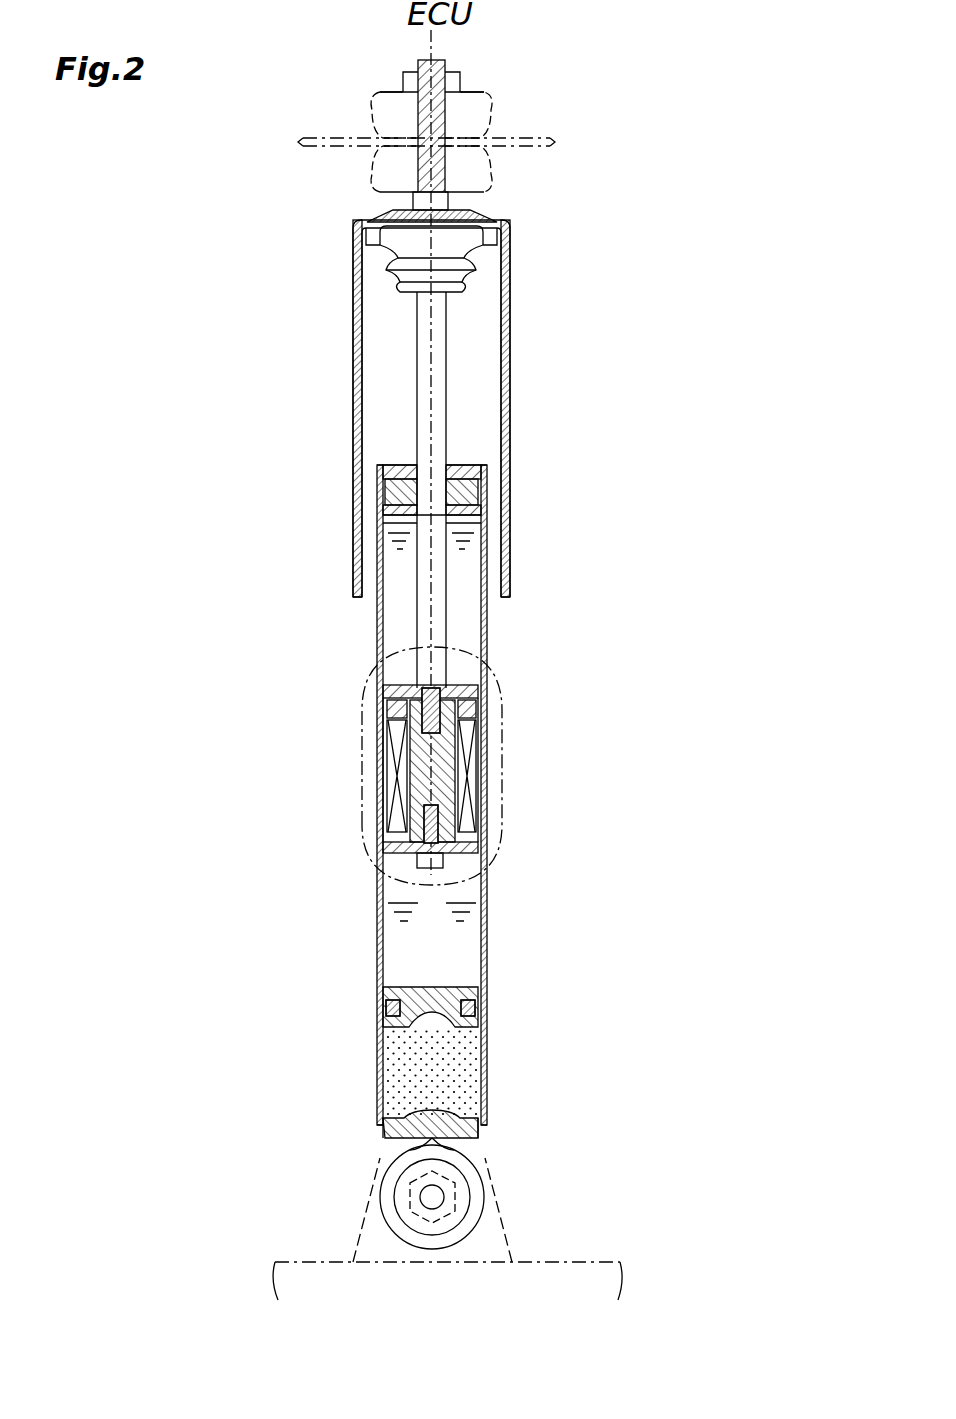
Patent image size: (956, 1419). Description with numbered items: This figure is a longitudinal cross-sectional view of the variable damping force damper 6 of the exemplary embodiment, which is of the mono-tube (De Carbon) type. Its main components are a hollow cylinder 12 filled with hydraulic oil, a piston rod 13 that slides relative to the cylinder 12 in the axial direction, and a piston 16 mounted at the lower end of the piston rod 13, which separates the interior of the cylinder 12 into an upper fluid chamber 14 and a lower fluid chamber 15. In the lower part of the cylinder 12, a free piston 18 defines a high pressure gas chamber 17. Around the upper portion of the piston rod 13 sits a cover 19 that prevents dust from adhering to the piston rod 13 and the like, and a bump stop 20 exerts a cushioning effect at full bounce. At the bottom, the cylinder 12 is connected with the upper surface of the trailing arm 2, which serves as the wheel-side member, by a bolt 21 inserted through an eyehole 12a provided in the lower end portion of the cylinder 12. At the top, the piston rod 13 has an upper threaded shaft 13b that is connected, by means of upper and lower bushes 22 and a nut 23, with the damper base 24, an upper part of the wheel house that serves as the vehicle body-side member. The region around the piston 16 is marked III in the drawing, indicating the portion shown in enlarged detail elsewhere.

The trailing arm 2 is at (545, 1267).
The damper 6 is at (178, 331).
The cylinder 12 is at (385, 881).
The eyehole 12a is at (388, 1183).
The piston rod 13 is at (420, 625).
The upper threaded shaft 13b is at (418, 62).
The upper fluid chamber 14 is at (470, 632).
The lower fluid chamber 15 is at (465, 940).
The piston 16 is at (384, 788).
The high pressure gas chamber 17 is at (460, 1066).
The free piston 18 is at (385, 996).
The cover 19 is at (355, 405).
The bump stop 20 is at (403, 270).
The bolt 21 is at (450, 1192).
The bushes 22 is at (478, 116).
The nut 23 is at (458, 80).
The damper base 24 is at (330, 142).
The detail region III is at (500, 778).